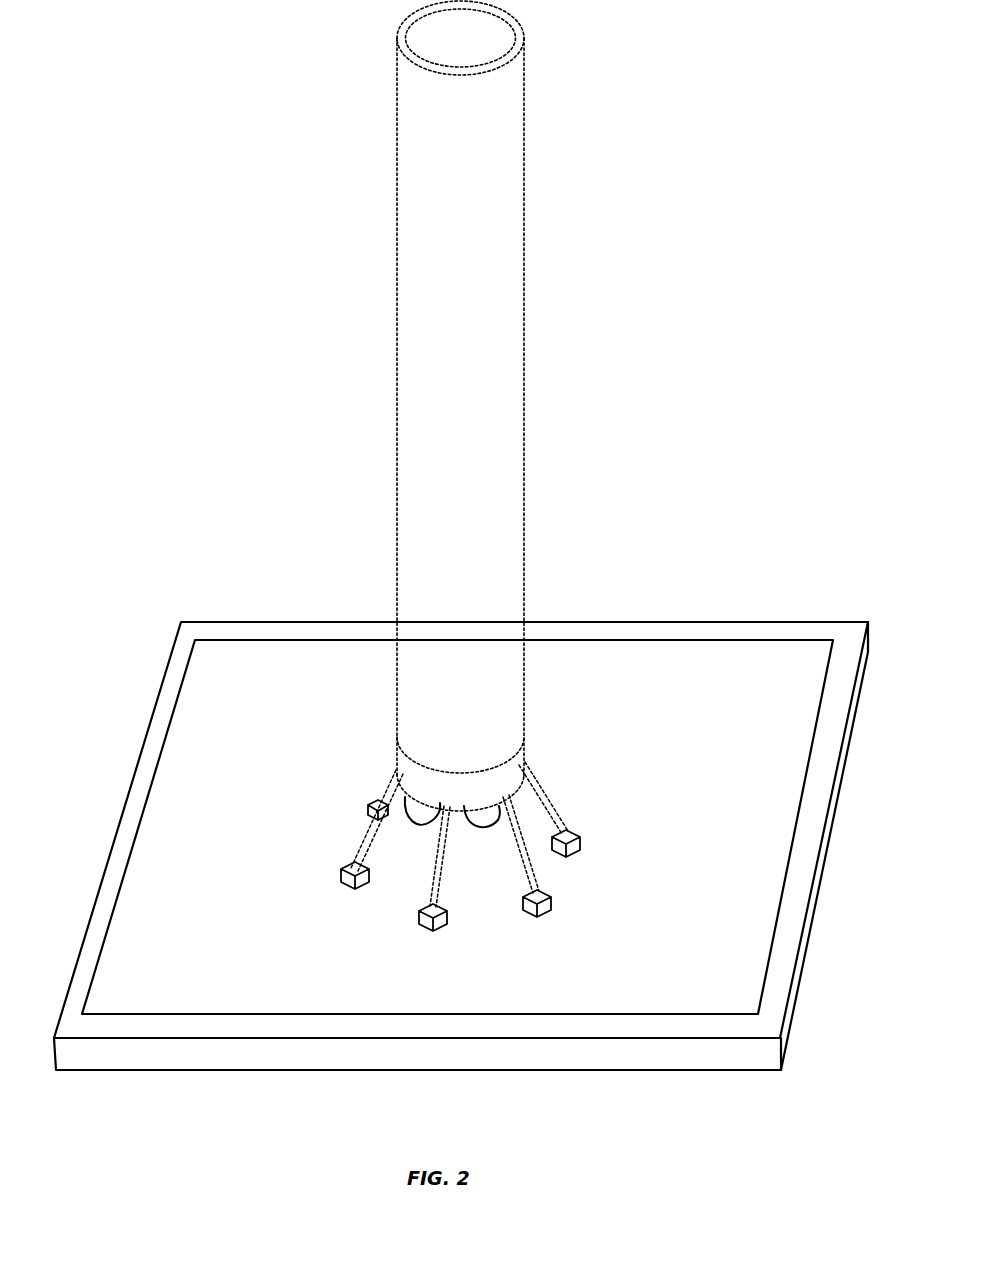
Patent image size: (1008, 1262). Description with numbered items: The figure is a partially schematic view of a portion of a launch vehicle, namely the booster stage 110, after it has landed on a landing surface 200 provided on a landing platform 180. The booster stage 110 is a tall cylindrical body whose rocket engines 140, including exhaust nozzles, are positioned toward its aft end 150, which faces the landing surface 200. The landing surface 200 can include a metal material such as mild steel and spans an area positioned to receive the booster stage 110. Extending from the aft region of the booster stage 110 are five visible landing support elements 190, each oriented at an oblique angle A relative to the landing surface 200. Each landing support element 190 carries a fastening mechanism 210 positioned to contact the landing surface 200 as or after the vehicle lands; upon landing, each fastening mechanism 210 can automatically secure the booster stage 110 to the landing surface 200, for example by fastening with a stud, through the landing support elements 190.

The booster stage 110 is at (397, 457).
The rocket engine 140 is at (414, 826).
The aft end 150 is at (355, 795).
The landing platform 180 is at (727, 1055).
The landing support element 190 is at (394, 785).
The landing surface 200 is at (735, 950).
The fastening mechanism 210 is at (368, 805).
The oblique angle A is at (530, 835).